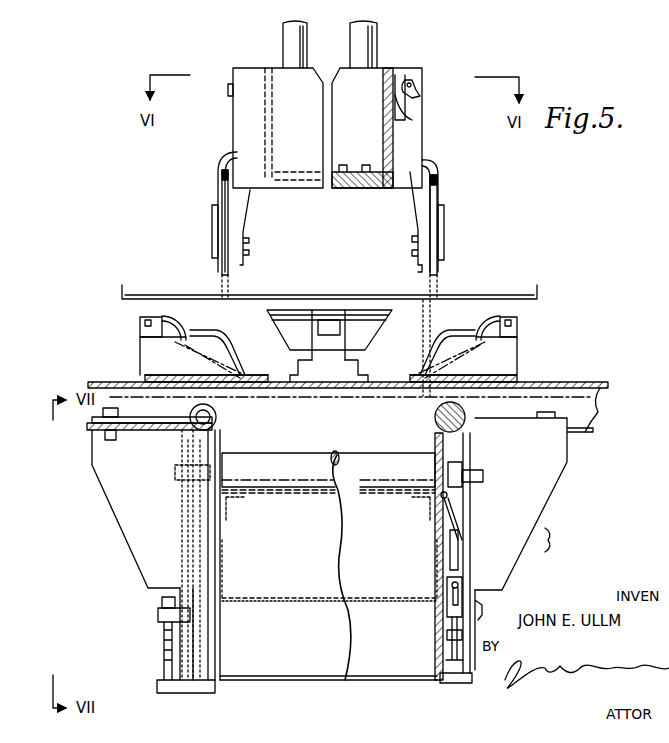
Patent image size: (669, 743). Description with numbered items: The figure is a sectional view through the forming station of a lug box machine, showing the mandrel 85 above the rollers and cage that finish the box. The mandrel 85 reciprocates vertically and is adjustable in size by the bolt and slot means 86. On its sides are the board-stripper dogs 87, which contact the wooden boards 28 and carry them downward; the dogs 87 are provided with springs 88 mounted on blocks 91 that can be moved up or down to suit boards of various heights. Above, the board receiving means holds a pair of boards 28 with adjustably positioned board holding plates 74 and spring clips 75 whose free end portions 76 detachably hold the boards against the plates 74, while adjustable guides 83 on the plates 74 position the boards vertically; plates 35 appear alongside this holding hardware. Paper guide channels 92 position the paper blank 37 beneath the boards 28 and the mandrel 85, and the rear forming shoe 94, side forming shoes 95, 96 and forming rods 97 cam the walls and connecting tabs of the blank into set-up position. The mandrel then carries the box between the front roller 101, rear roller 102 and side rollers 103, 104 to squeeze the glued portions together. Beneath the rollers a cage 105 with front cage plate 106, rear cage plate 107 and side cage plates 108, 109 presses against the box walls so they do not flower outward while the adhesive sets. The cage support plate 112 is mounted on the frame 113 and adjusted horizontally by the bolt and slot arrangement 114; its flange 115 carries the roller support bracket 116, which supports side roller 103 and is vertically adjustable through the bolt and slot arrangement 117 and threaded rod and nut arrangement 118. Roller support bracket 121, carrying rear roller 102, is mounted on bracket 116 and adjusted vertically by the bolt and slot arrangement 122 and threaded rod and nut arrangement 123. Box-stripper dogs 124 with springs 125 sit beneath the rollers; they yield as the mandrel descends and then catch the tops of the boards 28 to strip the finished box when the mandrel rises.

The mandrel 85 is at (285, 75).
The blocks 91 is at (398, 73).
The board-stripper dogs 87 is at (228, 88).
The springs 88 is at (408, 100).
The spring clips 75 is at (232, 152).
The adjustable guides 83 is at (221, 182).
The board holding plates 74 is at (215, 232).
The clamping plate 35 is at (212, 243).
The bolt and slot means 86 is at (367, 190).
The free end portions 76 is at (416, 266).
The wooden boards 28 is at (230, 277).
The paper guide channels 92 is at (120, 292).
The paper blank 37 is at (486, 296).
The side forming shoe 95 is at (170, 318).
The side forming shoe 96 is at (510, 317).
The forming rods 97 is at (230, 348).
The rear forming shoe 94 is at (372, 342).
The side roller 103 is at (190, 412).
The side roller 104 is at (466, 413).
The frame 113 is at (88, 428).
The bolt and slot arrangement 114 is at (117, 441).
The rear roller 102 is at (303, 457).
The front roller 101 is at (375, 457).
The rear cage plate 107 is at (280, 494).
The front cage plate 106 is at (397, 494).
The box-stripper dogs 124 is at (233, 500).
The bolt and slot arrangement 117 is at (175, 480).
The springs 125 is at (462, 510).
The cage support plate 112 is at (120, 514).
The flange 115 is at (180, 538).
The cage 105 is at (565, 540).
The roller support bracket 121 is at (226, 578).
The bolt and slot arrangement 122 is at (224, 612).
The side cage plate 108 is at (221, 635).
The side cage plate 109 is at (445, 635).
The threaded rod and nut arrangement 118 is at (160, 640).
The threaded rod and nut arrangement 123 is at (224, 652).
The roller support bracket 116 is at (200, 694).